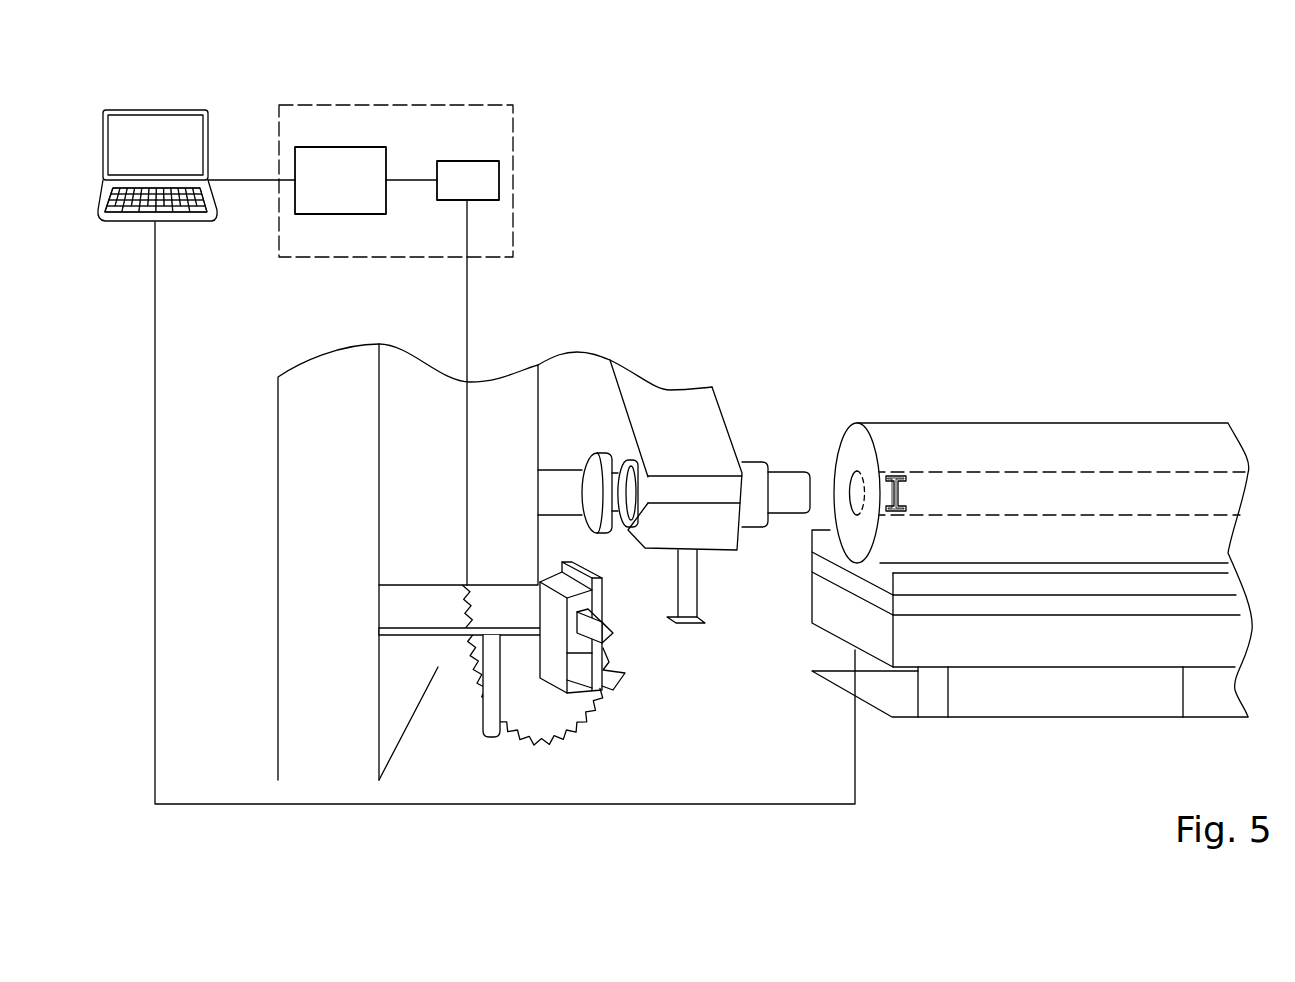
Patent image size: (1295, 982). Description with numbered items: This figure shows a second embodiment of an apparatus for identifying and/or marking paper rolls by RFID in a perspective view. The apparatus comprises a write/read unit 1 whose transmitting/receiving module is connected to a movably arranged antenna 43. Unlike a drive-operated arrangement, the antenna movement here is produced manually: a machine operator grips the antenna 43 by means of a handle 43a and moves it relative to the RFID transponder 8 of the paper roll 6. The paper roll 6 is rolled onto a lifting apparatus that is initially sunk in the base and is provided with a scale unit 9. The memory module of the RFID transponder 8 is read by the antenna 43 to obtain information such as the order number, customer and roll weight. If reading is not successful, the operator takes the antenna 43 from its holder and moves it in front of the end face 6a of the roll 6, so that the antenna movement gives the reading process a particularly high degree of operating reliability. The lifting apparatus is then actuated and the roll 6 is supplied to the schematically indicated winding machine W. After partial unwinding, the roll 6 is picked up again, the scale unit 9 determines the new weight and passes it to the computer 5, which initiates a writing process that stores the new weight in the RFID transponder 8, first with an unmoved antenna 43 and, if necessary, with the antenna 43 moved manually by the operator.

The write/read unit 1 is at (403, 107).
The computer 5 is at (156, 108).
The winding machine W is at (725, 420).
The antenna 43 is at (603, 603).
The handle 43a is at (615, 647).
The paper roll 6 is at (1047, 423).
The end face 6a is at (852, 442).
The RFID transponder 8 is at (905, 495).
The scale unit 9 is at (1218, 585).